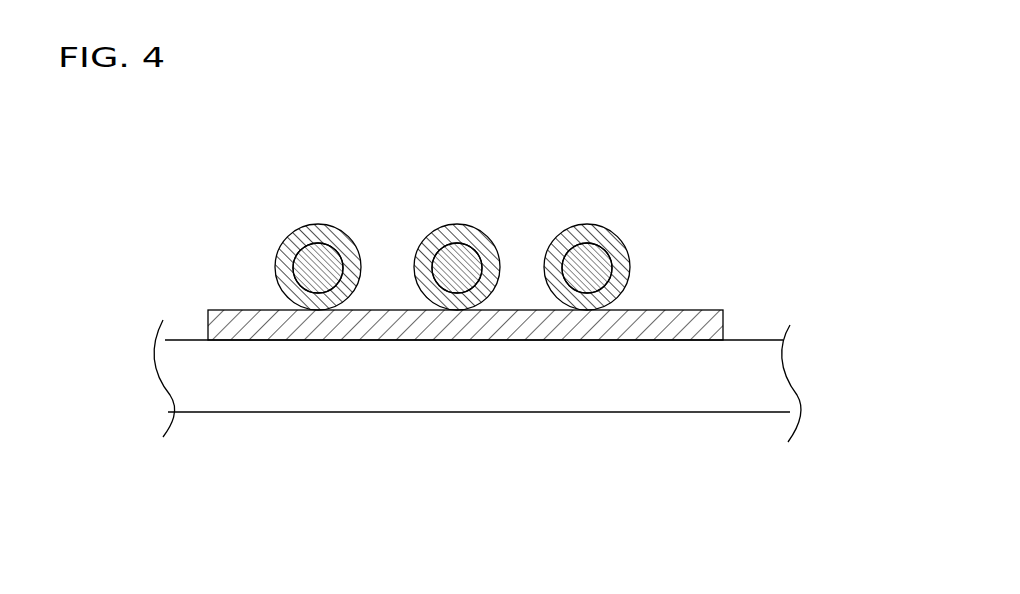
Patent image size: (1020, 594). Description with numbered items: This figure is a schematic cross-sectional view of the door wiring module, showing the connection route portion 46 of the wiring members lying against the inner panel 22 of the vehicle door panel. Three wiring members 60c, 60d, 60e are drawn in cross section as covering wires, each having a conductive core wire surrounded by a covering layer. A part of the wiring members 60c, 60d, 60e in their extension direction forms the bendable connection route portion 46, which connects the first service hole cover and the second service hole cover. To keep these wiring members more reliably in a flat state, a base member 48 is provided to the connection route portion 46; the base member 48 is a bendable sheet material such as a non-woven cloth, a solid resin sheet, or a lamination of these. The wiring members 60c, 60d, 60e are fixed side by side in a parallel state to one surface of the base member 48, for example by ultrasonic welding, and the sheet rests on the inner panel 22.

The inner panel 22 is at (757, 340).
The connection route portion 46 is at (664, 156).
The base member 48 is at (688, 310).
The wiring member 60c is at (318, 224).
The wiring member 60d is at (457, 224).
The wiring member 60e is at (587, 224).